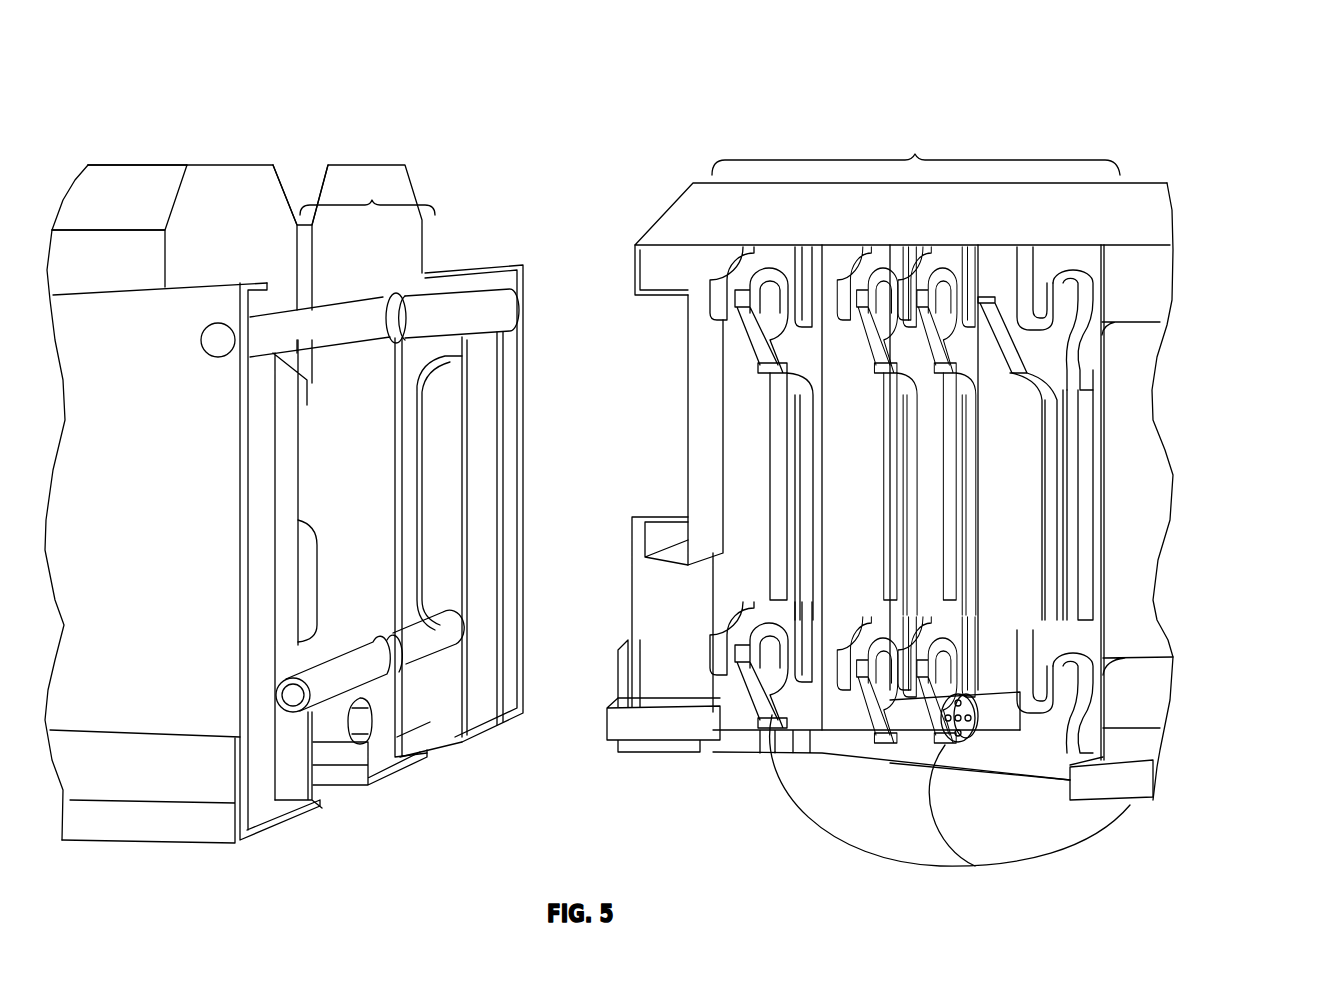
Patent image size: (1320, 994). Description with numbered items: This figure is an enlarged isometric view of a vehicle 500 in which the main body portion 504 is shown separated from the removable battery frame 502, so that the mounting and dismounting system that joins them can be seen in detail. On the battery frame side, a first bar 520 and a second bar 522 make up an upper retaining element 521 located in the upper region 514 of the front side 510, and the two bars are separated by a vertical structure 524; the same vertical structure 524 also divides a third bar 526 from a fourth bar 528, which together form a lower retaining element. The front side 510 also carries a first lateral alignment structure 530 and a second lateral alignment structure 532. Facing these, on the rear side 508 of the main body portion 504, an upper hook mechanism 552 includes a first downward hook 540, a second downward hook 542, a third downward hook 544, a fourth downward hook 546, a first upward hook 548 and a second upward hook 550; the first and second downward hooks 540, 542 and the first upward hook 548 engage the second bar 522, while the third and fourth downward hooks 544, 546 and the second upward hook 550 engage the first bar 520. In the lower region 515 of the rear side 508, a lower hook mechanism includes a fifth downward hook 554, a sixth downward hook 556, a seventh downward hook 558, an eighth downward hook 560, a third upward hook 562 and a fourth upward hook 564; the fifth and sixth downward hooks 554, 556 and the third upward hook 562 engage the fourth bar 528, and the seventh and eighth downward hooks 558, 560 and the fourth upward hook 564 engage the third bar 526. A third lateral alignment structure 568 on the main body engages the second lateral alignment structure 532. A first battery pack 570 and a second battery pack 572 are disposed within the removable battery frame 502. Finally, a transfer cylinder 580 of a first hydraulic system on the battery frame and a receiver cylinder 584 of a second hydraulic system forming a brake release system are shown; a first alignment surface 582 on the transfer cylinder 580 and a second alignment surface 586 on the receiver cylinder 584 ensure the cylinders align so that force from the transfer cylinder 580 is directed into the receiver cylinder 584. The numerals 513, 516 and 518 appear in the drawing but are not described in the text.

The vehicle 500 is at (689, 100).
The removable battery frame 502 is at (290, 135).
The main body portion 504 is at (976, 146).
The rear side 508 is at (1190, 435).
The front side 510 is at (413, 802).
The rail plate 513 is at (652, 190).
The upper region 514 is at (530, 242).
The lower region 515 is at (631, 760).
The side plate 516 is at (530, 731).
The housing 518 is at (135, 860).
The first bar 520 is at (330, 315).
The upper retaining element 521 is at (360, 200).
The second bar 522 is at (412, 305).
The vertical structure 524 is at (398, 458).
The third bar 526 is at (358, 655).
The fourth bar 528 is at (420, 660).
The first lateral alignment structure 530 is at (487, 578).
The second lateral alignment structure 532 is at (258, 810).
The first downward hook 540 is at (773, 262).
The second downward hook 542 is at (893, 258).
The third downward hook 544 is at (957, 258).
The fourth downward hook 546 is at (1085, 262).
The first upward hook 548 is at (775, 340).
The second upward hook 550 is at (1033, 378).
The upper hook mechanism 552 is at (913, 155).
The fifth downward hook 554 is at (745, 617).
The sixth downward hook 556 is at (852, 625).
The seventh downward hook 558 is at (935, 630).
The eighth downward hook 560 is at (1022, 650).
The third upward hook 562 is at (788, 710).
The fourth upward hook 564 is at (1038, 740).
The third lateral alignment structure 568 is at (1105, 790).
The first battery pack 570 is at (236, 190).
The second battery pack 572 is at (342, 185).
The transfer cylinder 580 is at (330, 735).
The first alignment surface 582 is at (372, 720).
The receiver cylinder 584 is at (980, 848).
The second alignment surface 586 is at (940, 732).